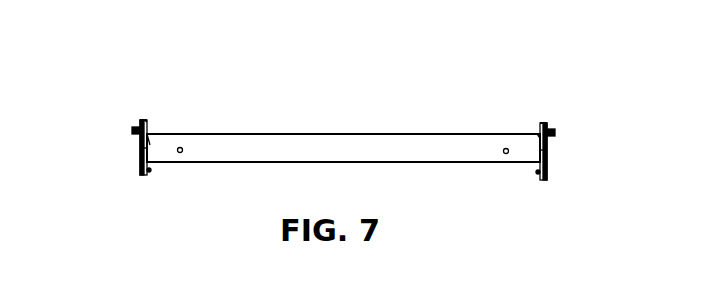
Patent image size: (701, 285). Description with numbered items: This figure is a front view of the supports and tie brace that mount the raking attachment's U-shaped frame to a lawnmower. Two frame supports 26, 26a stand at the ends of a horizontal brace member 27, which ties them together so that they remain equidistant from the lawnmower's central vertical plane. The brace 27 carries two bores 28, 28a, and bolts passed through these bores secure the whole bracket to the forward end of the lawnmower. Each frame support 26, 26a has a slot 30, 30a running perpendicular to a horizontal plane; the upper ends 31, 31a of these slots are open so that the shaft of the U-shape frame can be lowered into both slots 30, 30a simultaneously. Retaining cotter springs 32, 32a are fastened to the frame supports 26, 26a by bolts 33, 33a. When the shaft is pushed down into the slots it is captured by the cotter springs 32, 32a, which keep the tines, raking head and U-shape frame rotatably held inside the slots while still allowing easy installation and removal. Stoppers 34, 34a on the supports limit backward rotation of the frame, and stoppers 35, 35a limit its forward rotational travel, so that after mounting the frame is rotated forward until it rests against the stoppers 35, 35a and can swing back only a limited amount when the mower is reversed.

The frame support 26 is at (548, 163).
The frame support 26a is at (140, 165).
The brace member 27 is at (333, 132).
The bore 28 is at (497, 152).
The bore 28a is at (190, 148).
The slot 30 is at (542, 122).
The slot 30a is at (147, 118).
The upper end of slot 31 is at (545, 122).
The upper end of slot 31a is at (136, 118).
The retaining cotter spring 32 is at (538, 137).
The retaining cotter spring 32a is at (148, 144).
The bolt 33 is at (535, 169).
The bolt 33a is at (152, 168).
The stopper 34 is at (552, 122).
The stopper 34a is at (135, 117).
The stopper 35 is at (555, 133).
The stopper 35a is at (127, 133).